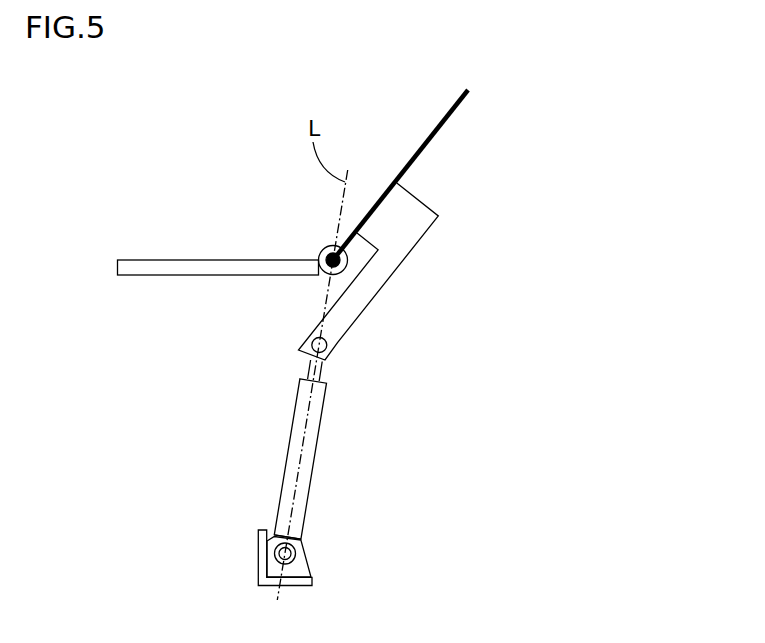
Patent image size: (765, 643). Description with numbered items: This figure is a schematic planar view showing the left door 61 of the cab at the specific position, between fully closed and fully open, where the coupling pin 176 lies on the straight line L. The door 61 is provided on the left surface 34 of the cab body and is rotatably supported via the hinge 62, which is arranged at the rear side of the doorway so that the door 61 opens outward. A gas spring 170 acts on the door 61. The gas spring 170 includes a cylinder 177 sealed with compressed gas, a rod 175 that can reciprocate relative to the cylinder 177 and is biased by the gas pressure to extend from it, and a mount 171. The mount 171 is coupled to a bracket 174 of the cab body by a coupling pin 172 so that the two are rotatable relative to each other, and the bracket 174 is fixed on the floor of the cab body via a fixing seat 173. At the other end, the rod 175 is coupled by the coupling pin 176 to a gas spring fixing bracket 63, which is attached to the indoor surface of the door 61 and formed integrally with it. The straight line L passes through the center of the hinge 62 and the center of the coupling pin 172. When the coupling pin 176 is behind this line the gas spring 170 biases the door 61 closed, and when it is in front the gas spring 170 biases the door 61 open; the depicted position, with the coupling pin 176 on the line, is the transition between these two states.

The left surface 34 is at (180, 260).
The left door 61 is at (437, 123).
The hinge 62 is at (328, 248).
The gas spring fixing bracket 63 is at (380, 266).
The gas spring 170 is at (272, 440).
The mount 171 is at (296, 551).
The coupling pin 172 is at (303, 563).
The fixing seat 173 is at (258, 575).
The bracket 174 is at (272, 544).
The rod 175 is at (310, 362).
The coupling pin 176 is at (338, 340).
The cylinder 177 is at (305, 468).